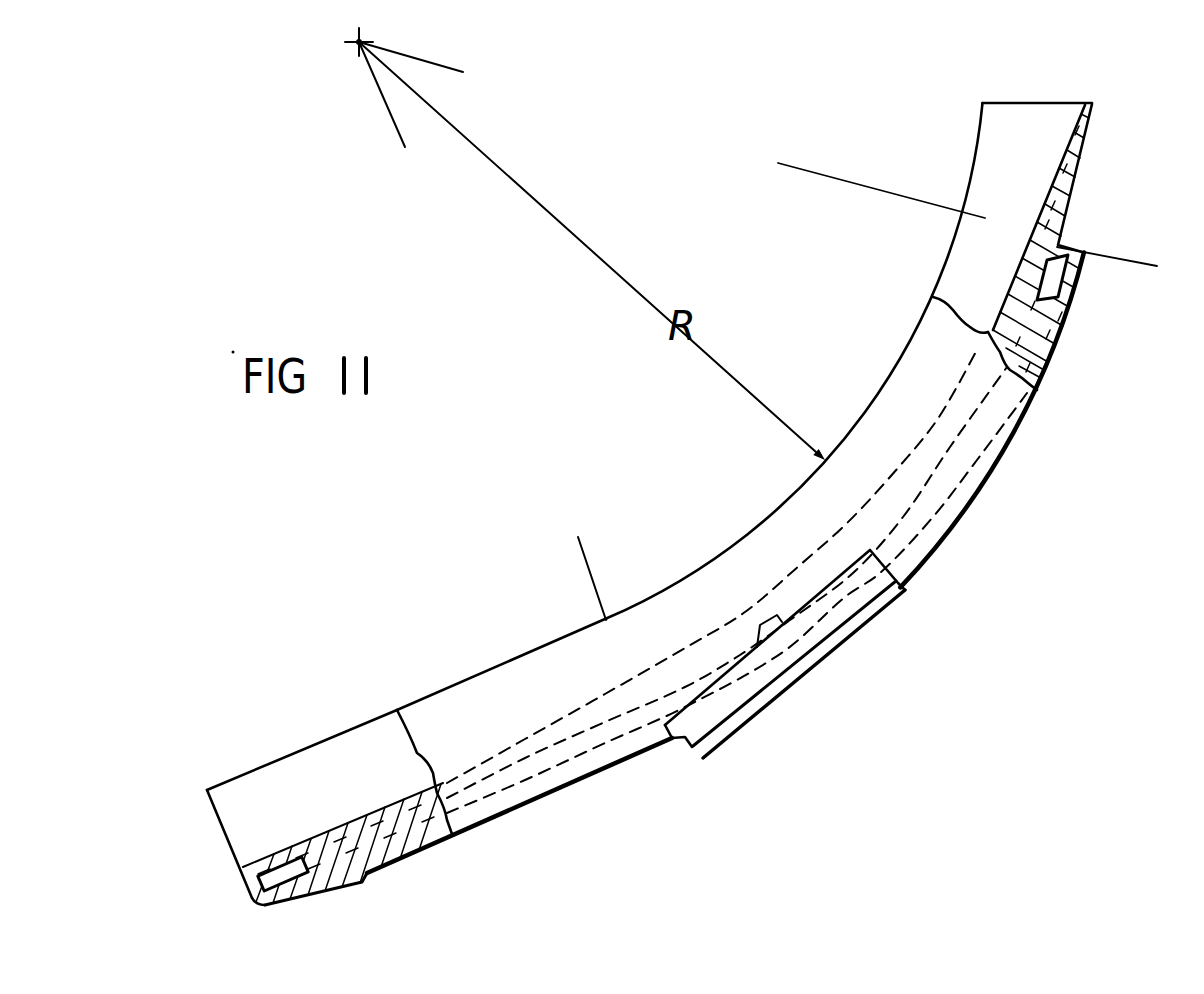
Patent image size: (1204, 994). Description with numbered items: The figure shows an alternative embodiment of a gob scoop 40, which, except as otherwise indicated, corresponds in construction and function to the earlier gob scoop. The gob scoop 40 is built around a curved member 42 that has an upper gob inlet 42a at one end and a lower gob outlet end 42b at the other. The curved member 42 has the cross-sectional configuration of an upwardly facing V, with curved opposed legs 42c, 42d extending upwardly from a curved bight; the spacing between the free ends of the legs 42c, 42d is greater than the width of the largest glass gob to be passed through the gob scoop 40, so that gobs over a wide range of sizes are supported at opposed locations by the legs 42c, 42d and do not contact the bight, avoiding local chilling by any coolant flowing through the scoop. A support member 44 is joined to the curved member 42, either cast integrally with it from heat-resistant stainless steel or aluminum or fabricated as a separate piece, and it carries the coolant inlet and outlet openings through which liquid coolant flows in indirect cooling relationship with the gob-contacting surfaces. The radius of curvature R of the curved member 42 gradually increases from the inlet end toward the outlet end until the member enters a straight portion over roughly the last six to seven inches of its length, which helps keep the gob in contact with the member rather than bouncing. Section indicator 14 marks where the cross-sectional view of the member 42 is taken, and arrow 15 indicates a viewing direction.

The gob scoop 40 is at (757, 296).
The curved member 42 is at (853, 422).
The upper gob inlet 42a is at (1092, 104).
The lower gob outlet end 42b is at (233, 859).
The curved opposed leg 42c is at (300, 749).
The curved opposed leg 42d is at (427, 696).
The support member 44 is at (895, 592).
The section line 14- 14 is at (1110, 292).
The viewing direction arrow 15 is at (858, 721).